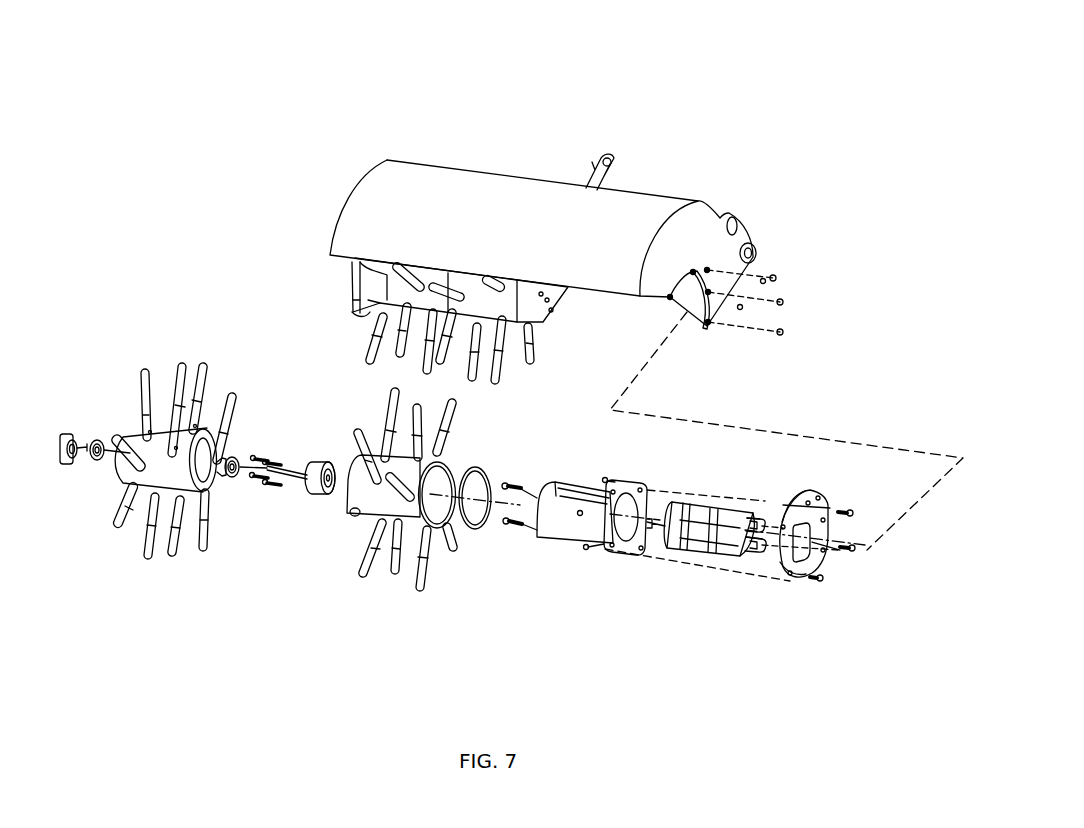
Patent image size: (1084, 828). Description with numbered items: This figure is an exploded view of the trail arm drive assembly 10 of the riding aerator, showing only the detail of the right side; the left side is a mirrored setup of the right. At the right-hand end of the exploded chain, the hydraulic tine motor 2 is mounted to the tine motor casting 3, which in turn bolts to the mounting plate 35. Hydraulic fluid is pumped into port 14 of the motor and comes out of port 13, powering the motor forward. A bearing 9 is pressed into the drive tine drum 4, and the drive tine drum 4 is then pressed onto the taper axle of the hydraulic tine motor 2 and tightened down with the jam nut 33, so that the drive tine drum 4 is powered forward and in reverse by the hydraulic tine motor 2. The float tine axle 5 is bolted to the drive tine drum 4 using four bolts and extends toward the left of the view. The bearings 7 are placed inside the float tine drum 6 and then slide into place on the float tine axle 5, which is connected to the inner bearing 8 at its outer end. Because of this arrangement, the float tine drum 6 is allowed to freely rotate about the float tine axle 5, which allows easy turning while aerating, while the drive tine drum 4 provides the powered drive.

The trail arm drive assembly 10 is at (582, 112).
The inner bearing 8 is at (65, 400).
The bearings 7 is at (270, 438).
The float tine drum 6 is at (155, 473).
The float tine axle 5 is at (290, 497).
The drive tine drum 4 is at (358, 497).
The bearing 9 is at (470, 552).
The tine motor casting 3 is at (565, 555).
The jam nut 33 is at (660, 492).
The hydraulic tine motor 2 is at (698, 560).
The port 14 is at (765, 568).
The port 13 is at (770, 492).
The mounting plate 35 is at (832, 475).